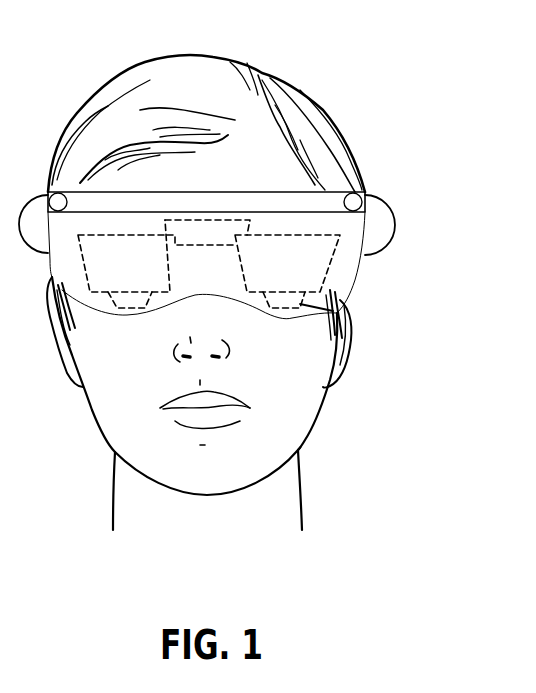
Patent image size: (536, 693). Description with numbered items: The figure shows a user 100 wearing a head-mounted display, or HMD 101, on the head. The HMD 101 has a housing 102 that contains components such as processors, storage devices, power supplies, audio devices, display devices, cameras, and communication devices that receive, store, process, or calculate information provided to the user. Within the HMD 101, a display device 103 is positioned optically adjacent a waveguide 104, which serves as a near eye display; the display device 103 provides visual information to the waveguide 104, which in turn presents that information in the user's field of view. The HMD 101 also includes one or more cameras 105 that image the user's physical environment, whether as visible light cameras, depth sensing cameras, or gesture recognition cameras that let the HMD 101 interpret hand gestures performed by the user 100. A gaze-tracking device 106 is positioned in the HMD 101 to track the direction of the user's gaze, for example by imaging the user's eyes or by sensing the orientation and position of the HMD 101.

The user 100 is at (253, 273).
The head-mounted display 101 is at (267, 288).
The housing 102 is at (244, 223).
The display device 103 is at (250, 234).
The waveguide 104 is at (271, 261).
The camera 105 is at (365, 201).
The gaze-tracking device 106 is at (352, 319).